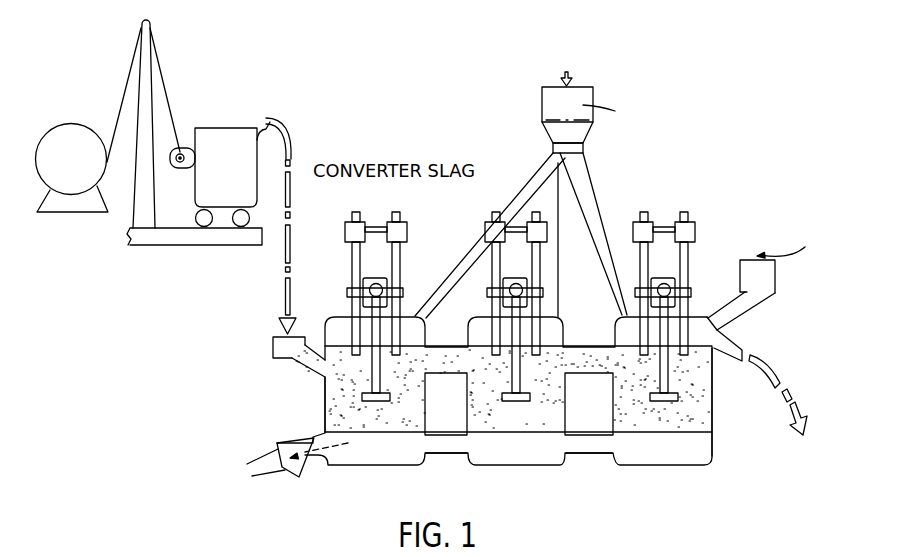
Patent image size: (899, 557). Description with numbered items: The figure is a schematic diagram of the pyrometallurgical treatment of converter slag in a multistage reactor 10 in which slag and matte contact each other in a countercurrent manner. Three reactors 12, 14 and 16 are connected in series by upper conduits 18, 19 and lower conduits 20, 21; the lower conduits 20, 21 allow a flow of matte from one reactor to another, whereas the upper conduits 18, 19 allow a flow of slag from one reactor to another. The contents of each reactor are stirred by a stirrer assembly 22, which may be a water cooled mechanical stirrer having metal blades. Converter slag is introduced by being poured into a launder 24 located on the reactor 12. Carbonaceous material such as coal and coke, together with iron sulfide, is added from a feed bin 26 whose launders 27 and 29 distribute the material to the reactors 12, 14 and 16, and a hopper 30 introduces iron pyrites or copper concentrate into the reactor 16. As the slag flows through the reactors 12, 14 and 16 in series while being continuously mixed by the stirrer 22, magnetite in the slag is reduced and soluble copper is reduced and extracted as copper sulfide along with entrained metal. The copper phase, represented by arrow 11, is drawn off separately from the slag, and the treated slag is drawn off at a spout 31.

The multistage reactor 10 is at (393, 470).
The arrow 11 is at (302, 460).
The reactor 12 is at (325, 401).
The reactor 14 is at (513, 466).
The reactor 16 is at (713, 420).
The upper conduit 18 is at (448, 345).
The upper conduit 19 is at (580, 345).
The lower conduit 20 is at (446, 456).
The lower conduit 21 is at (587, 455).
The stirrer assembly 22 is at (412, 256).
The launder 24 is at (273, 347).
The feed bin 26 is at (542, 102).
The launder 27 is at (514, 221).
The launder 29 is at (566, 240).
The hopper 30 is at (776, 278).
The spout 31 is at (739, 337).